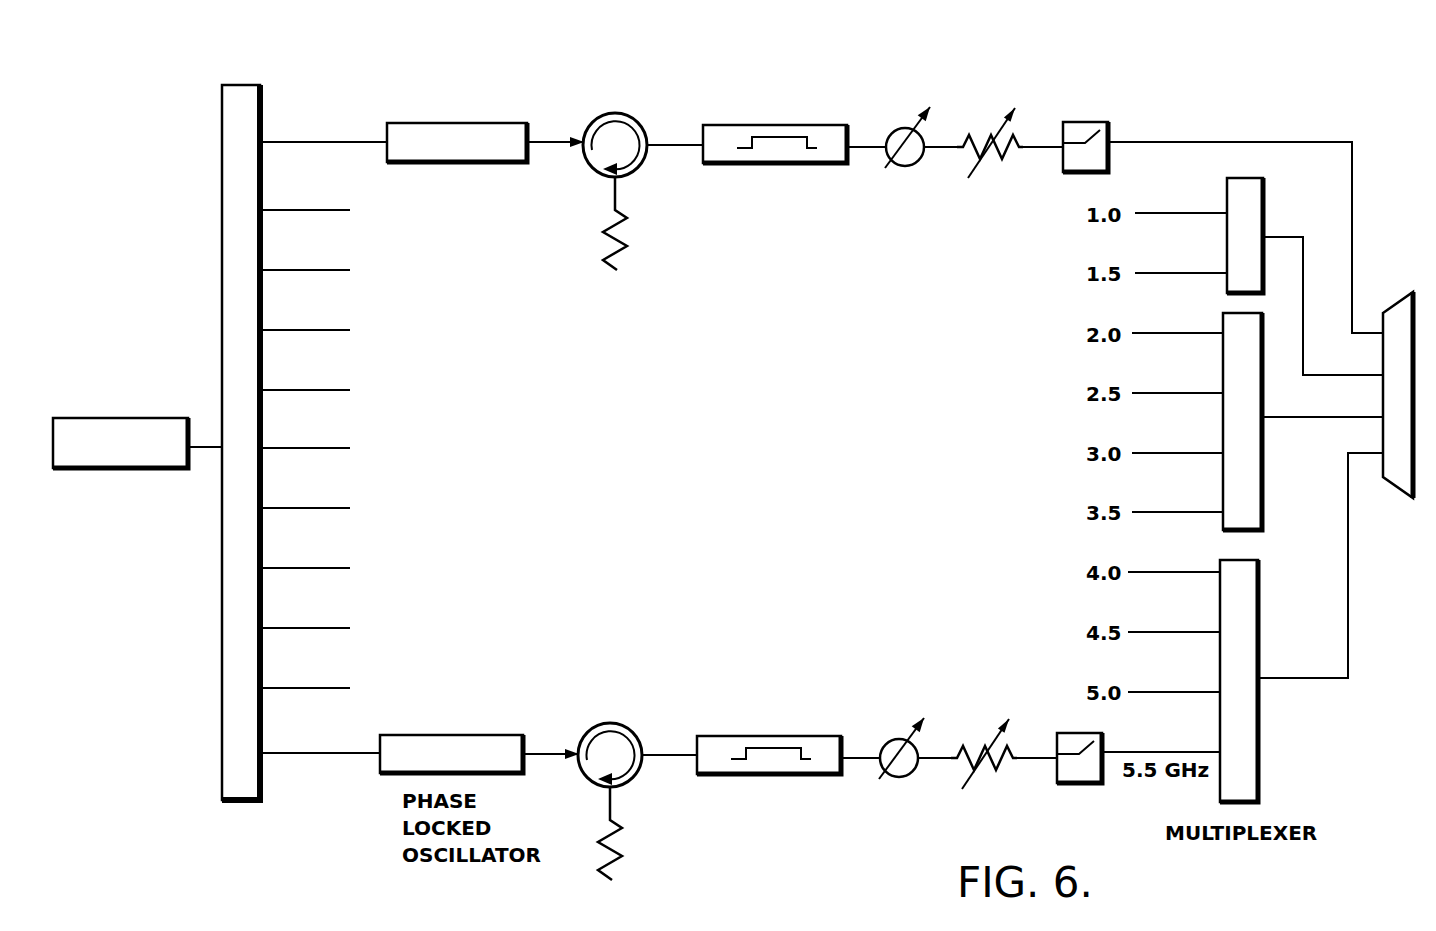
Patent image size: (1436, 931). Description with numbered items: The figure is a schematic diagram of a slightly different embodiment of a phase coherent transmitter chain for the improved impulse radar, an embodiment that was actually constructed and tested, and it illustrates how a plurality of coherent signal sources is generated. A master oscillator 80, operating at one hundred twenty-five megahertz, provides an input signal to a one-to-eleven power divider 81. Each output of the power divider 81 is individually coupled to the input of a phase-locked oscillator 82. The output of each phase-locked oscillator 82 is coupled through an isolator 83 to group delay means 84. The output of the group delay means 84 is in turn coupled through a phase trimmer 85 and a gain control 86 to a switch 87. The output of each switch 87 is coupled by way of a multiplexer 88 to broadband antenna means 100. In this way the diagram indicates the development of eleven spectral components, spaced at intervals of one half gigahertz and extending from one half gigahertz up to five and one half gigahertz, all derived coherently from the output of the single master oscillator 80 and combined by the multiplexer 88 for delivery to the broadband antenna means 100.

The master oscillator 80 is at (95, 418).
The 1:11 power divider 81 is at (222, 233).
The phase-locked oscillator 82 is at (433, 123).
The isolator 83 is at (585, 164).
The group delay means 84 is at (740, 125).
The phase trimmer 85 is at (884, 165).
The gain control 86 is at (998, 152).
The switch 87 is at (1108, 157).
The multiplexer 88 is at (1247, 108).
The broadband antenna means 100 is at (1393, 303).